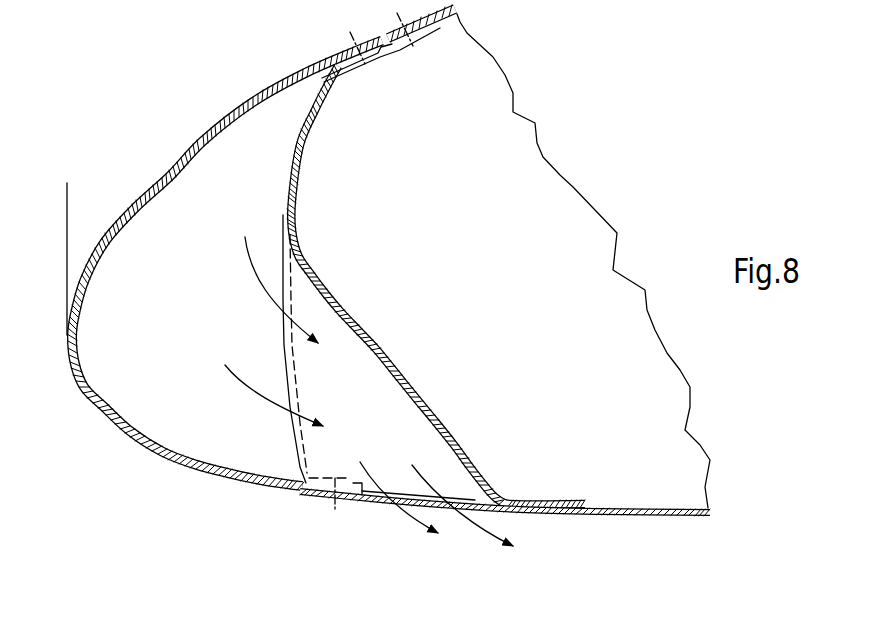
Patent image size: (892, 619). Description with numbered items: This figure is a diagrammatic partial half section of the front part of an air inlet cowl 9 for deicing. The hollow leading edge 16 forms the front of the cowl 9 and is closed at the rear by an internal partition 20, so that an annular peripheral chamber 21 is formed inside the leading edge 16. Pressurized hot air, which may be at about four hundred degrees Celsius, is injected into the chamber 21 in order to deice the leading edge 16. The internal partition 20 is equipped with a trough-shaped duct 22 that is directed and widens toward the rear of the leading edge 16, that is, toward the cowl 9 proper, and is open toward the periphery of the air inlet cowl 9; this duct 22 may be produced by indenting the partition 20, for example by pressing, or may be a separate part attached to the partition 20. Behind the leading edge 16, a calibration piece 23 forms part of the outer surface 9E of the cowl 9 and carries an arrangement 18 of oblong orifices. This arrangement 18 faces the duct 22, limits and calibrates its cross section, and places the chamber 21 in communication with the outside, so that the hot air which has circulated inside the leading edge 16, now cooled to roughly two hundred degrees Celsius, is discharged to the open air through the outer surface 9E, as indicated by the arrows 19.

The cowl 9 is at (618, 516).
The outer surface of the cowl 9E is at (671, 519).
The leading edge 16 is at (126, 190).
The arrangement of oblong orifices 18 is at (369, 509).
The arrows 19 is at (424, 480).
The internal partition 20 is at (290, 160).
The annular peripheral chamber 21 is at (190, 172).
The trough-shaped duct 22 is at (387, 390).
The calibration piece 23 is at (625, 507).